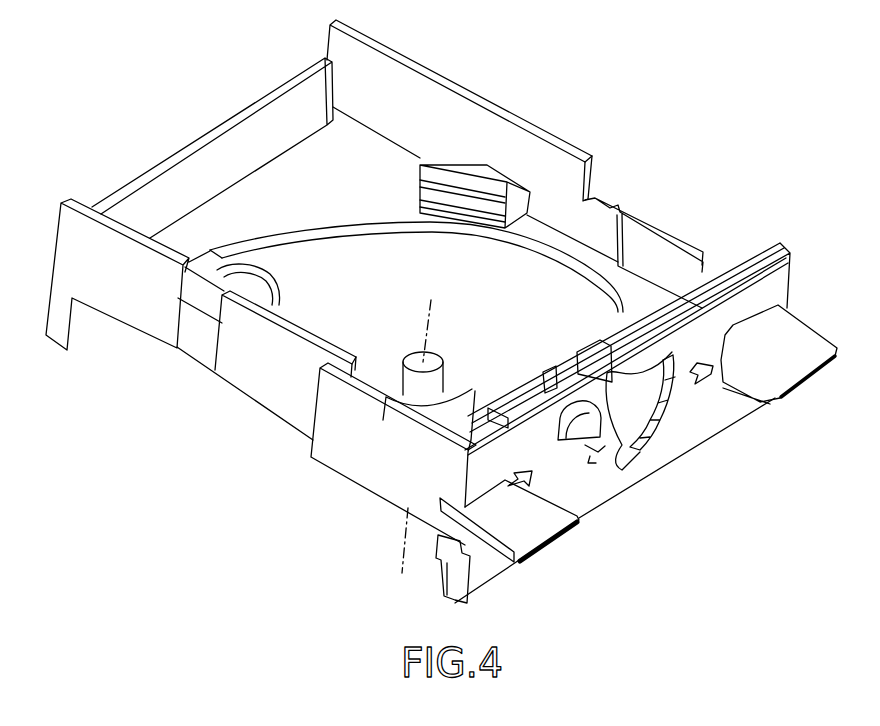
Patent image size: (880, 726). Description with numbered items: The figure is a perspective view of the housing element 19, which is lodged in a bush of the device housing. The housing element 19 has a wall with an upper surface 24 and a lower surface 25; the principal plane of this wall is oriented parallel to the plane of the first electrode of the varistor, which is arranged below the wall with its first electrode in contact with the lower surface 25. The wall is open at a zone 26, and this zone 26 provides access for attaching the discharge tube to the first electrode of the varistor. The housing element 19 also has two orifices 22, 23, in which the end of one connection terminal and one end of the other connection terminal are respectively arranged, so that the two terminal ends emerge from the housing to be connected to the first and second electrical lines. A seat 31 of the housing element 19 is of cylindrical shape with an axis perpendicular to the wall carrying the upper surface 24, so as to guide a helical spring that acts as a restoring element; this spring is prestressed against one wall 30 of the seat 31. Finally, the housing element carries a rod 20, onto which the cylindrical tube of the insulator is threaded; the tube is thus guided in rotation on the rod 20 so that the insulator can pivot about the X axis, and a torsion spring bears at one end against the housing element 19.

The housing element 19 is at (576, 133).
The rod 20 is at (405, 386).
The orifice 22 is at (740, 316).
The orifice 23 is at (487, 490).
The upper surface 24 is at (281, 177).
The lower surface 25 is at (333, 240).
The zone 26 is at (512, 265).
The wall 30 is at (213, 343).
The seat 31 is at (208, 305).